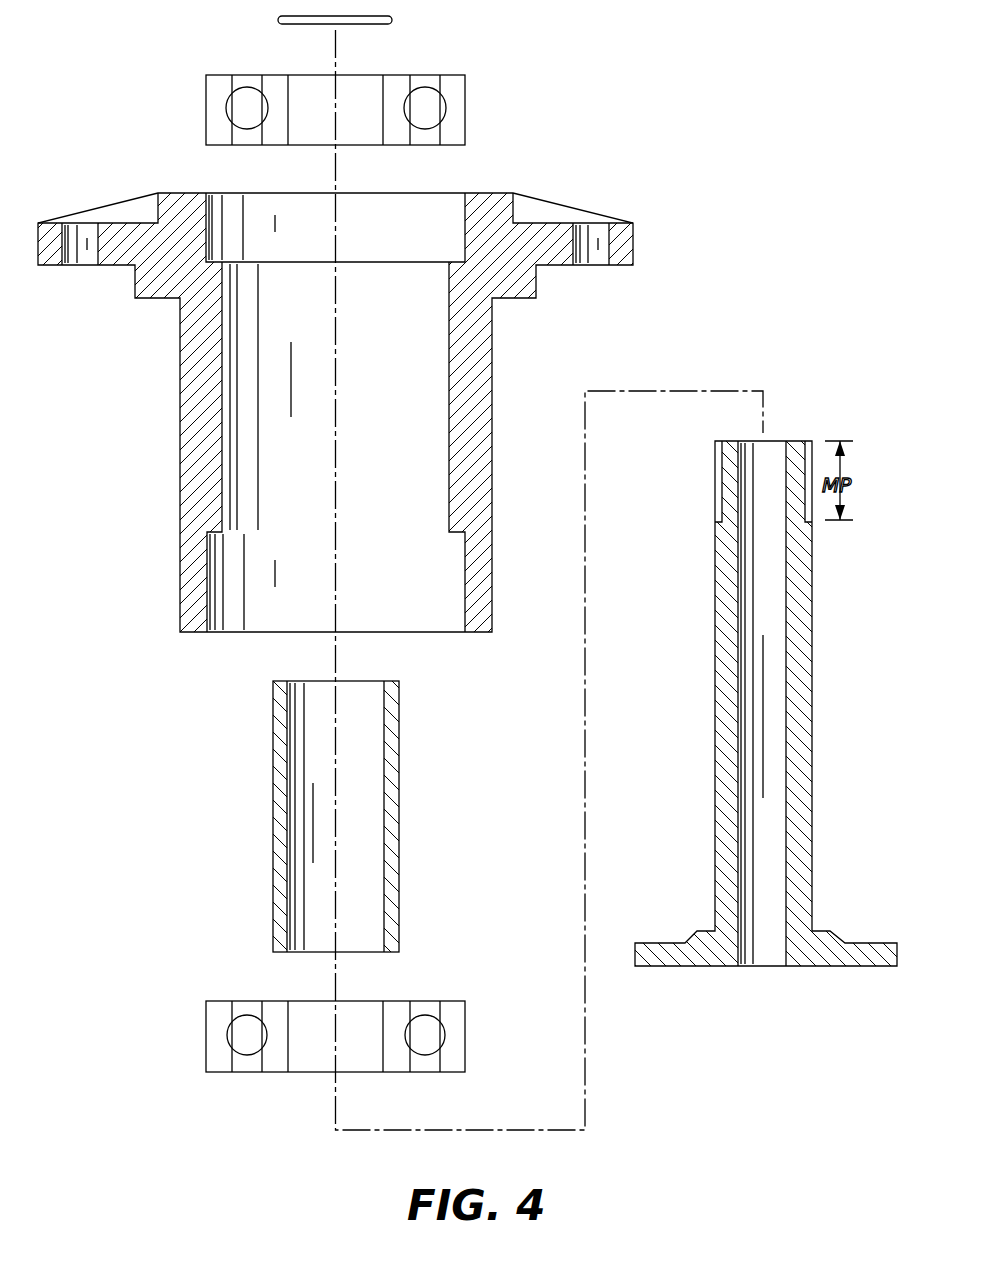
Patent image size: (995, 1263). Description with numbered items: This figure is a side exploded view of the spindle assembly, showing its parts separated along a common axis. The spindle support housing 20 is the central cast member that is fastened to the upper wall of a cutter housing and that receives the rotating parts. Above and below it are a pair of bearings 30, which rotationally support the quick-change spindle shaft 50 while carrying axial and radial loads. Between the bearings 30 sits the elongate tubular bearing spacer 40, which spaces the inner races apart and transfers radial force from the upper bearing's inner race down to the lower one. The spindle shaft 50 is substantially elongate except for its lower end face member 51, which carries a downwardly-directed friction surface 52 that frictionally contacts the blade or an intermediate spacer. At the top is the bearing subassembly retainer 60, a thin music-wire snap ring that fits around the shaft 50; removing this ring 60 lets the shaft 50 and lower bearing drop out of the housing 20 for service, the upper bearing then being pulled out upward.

The spindle support housing 20 is at (633, 248).
The bearings 30 is at (458, 100).
The bearing spacer 40 is at (280, 776).
The quick-change spindle shaft 50 is at (755, 737).
The lower end face member 51 is at (666, 956).
The friction surface 52 is at (705, 972).
The bearing subassembly retainer 60 is at (395, 18).